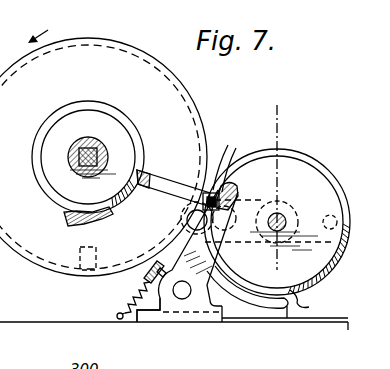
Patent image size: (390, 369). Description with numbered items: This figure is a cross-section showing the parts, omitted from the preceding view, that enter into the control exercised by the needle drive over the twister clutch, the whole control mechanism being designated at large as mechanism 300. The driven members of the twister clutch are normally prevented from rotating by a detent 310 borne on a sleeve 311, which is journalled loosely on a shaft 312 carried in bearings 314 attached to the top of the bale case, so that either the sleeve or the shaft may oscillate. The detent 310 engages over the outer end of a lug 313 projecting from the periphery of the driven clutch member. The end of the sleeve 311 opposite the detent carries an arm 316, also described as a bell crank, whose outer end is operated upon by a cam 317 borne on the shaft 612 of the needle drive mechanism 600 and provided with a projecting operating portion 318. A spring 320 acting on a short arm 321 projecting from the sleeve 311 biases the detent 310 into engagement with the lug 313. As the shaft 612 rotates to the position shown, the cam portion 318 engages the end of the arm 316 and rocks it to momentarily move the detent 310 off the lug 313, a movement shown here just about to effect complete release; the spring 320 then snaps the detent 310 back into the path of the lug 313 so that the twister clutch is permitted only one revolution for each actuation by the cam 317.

The twister clutch control mechanism 300 is at (112, 153).
The detent 310 is at (246, 170).
The sleeve 311 is at (160, 318).
The shaft 312 is at (181, 293).
The lug 313 is at (207, 185).
The bearings 314 is at (213, 240).
The arm 316 is at (250, 308).
The cam 317 is at (296, 293).
The projecting operating portion 318 is at (297, 306).
The spring 320 is at (128, 294).
The short arm 321 is at (147, 262).
The needle drive mechanism 600 is at (277, 200).
The shaft 612 is at (283, 214).